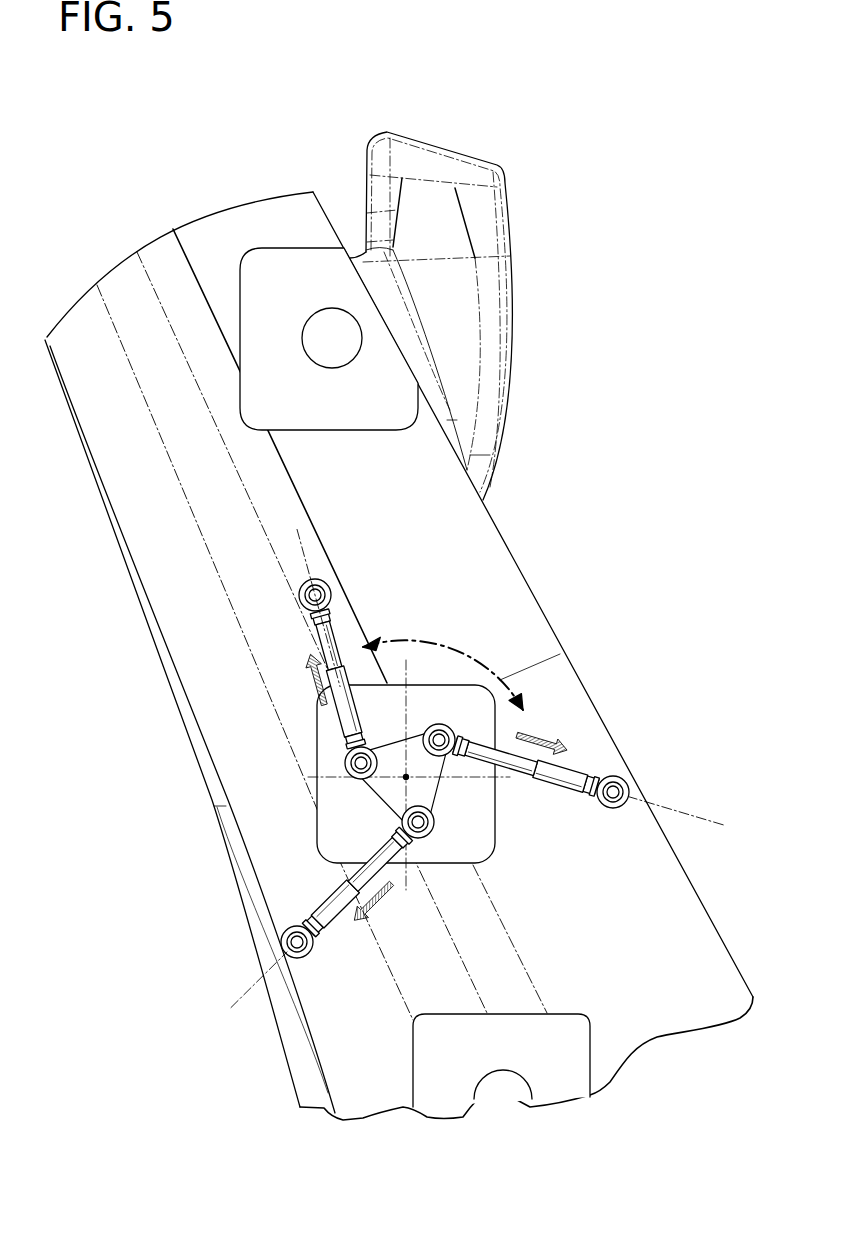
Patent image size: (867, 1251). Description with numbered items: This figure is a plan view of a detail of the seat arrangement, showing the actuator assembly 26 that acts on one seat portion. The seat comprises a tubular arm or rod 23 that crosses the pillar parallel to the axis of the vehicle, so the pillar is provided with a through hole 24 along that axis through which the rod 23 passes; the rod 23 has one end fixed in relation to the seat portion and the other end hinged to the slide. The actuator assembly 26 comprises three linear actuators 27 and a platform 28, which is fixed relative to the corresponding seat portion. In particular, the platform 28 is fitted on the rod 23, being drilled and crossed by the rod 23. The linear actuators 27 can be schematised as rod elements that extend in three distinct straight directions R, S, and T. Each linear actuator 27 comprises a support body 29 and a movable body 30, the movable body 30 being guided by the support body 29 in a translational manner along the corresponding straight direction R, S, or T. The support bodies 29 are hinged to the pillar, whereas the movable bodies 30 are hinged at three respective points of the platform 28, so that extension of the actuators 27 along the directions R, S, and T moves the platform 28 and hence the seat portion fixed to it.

The rod 23 is at (323, 322).
The through hole 24 is at (347, 417).
The actuator assembly 26 is at (470, 630).
The linear actuator 27 is at (297, 593).
The platform 28 is at (345, 775).
The support body 29 is at (335, 640).
The movable body 30 is at (330, 705).
The straight direction T is at (305, 560).
The straight direction S is at (245, 993).
The straight direction R is at (700, 815).